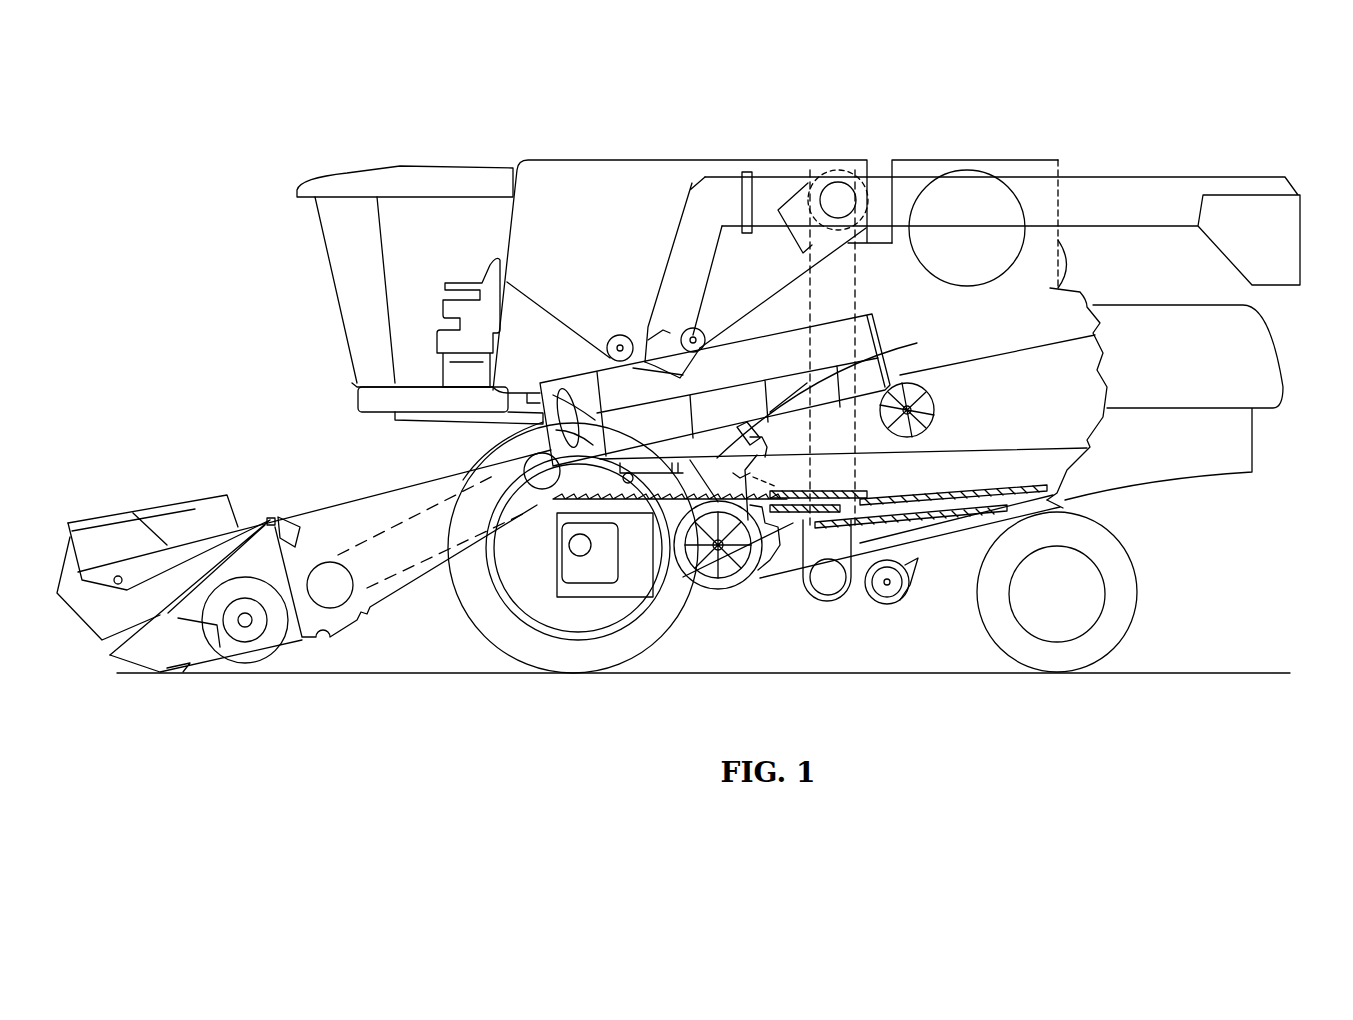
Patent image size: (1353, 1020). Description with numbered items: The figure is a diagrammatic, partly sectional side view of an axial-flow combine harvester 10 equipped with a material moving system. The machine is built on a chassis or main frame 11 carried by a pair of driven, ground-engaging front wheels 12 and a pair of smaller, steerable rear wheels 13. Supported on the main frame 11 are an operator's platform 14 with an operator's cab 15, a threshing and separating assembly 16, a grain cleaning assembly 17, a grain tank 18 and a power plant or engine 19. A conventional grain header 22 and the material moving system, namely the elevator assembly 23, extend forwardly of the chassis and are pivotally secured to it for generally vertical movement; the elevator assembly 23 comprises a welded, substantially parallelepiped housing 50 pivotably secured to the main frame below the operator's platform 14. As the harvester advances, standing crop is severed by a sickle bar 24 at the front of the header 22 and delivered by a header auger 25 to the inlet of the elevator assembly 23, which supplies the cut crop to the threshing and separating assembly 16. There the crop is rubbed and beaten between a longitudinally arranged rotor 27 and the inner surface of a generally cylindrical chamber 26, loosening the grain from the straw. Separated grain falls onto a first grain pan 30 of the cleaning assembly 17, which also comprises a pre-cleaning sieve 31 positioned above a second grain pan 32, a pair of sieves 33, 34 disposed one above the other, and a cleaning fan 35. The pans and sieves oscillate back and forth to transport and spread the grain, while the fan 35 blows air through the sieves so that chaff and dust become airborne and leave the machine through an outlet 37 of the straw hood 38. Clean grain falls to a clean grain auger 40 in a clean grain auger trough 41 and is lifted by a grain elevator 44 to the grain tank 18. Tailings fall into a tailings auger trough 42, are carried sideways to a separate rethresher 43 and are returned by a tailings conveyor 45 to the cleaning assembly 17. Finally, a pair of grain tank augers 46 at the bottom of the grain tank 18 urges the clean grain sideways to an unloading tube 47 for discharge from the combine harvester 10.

The combine harvester 10 is at (356, 138).
The chassis or main frame 11 is at (1063, 508).
The front wheels 12 is at (457, 600).
The rear wheels 13 is at (1133, 628).
The operator's platform 14 is at (363, 402).
The operator's cab 15 is at (332, 250).
The threshing and separating assembly 16 is at (500, 429).
The grain cleaning assembly 17 is at (768, 635).
The grain tank 18 is at (558, 160).
The power plant or engine 19 is at (968, 170).
The grain header 22 is at (136, 480).
The elevator assembly 23 is at (332, 532).
The sickle bar 24 is at (165, 677).
The header auger 25 is at (242, 640).
The cylindrical chamber 26 is at (772, 345).
The rotor 27 is at (522, 478).
The first grain pan 30 is at (557, 512).
The pre-cleaning sieve 31 is at (860, 490).
The second grain pan 32 is at (785, 567).
The sieve 33 is at (980, 490).
The sieve 34 is at (957, 520).
The cleaning fan 35 is at (717, 590).
The outlet 37 is at (1218, 504).
The straw hood 38 is at (1273, 345).
The clean grain auger 40 is at (820, 590).
The clean grain auger trough 41 is at (845, 600).
The tailings auger trough 42 is at (890, 605).
The rethresher 43 is at (930, 410).
The grain elevator 44 is at (863, 270).
The tailings conveyor 45 is at (872, 358).
The grain tank augers 46 is at (616, 337).
The unloading tube 47 is at (1122, 178).
The housing 50 is at (400, 488).